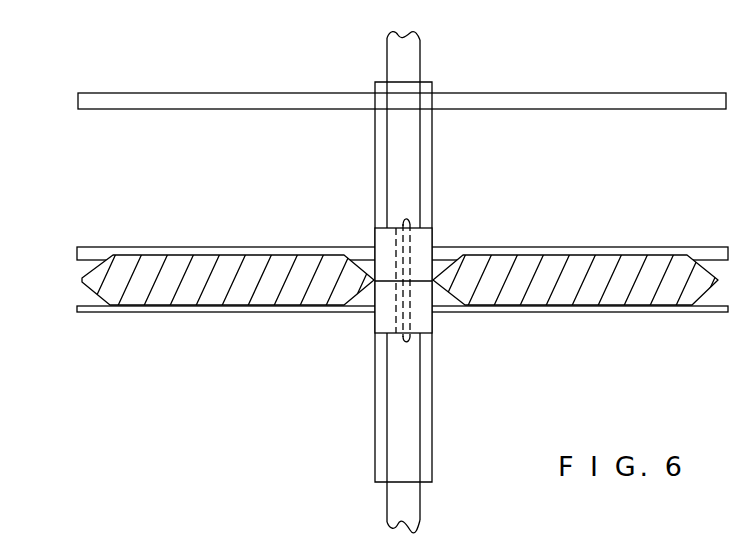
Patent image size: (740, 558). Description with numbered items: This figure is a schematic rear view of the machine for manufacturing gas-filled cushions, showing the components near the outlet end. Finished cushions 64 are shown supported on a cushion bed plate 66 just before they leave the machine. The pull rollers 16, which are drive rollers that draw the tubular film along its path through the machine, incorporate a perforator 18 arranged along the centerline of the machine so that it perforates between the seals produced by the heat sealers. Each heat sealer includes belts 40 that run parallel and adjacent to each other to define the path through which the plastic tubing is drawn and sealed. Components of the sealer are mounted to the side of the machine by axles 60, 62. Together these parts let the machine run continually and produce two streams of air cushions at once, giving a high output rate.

The pull rollers 16 is at (420, 318).
The perforator 18 is at (378, 320).
The belt 40 is at (382, 93).
The axle 60 is at (113, 103).
The axle 62 is at (95, 252).
The finished cushions 64 is at (100, 285).
The cushion bed plate 66 is at (108, 311).